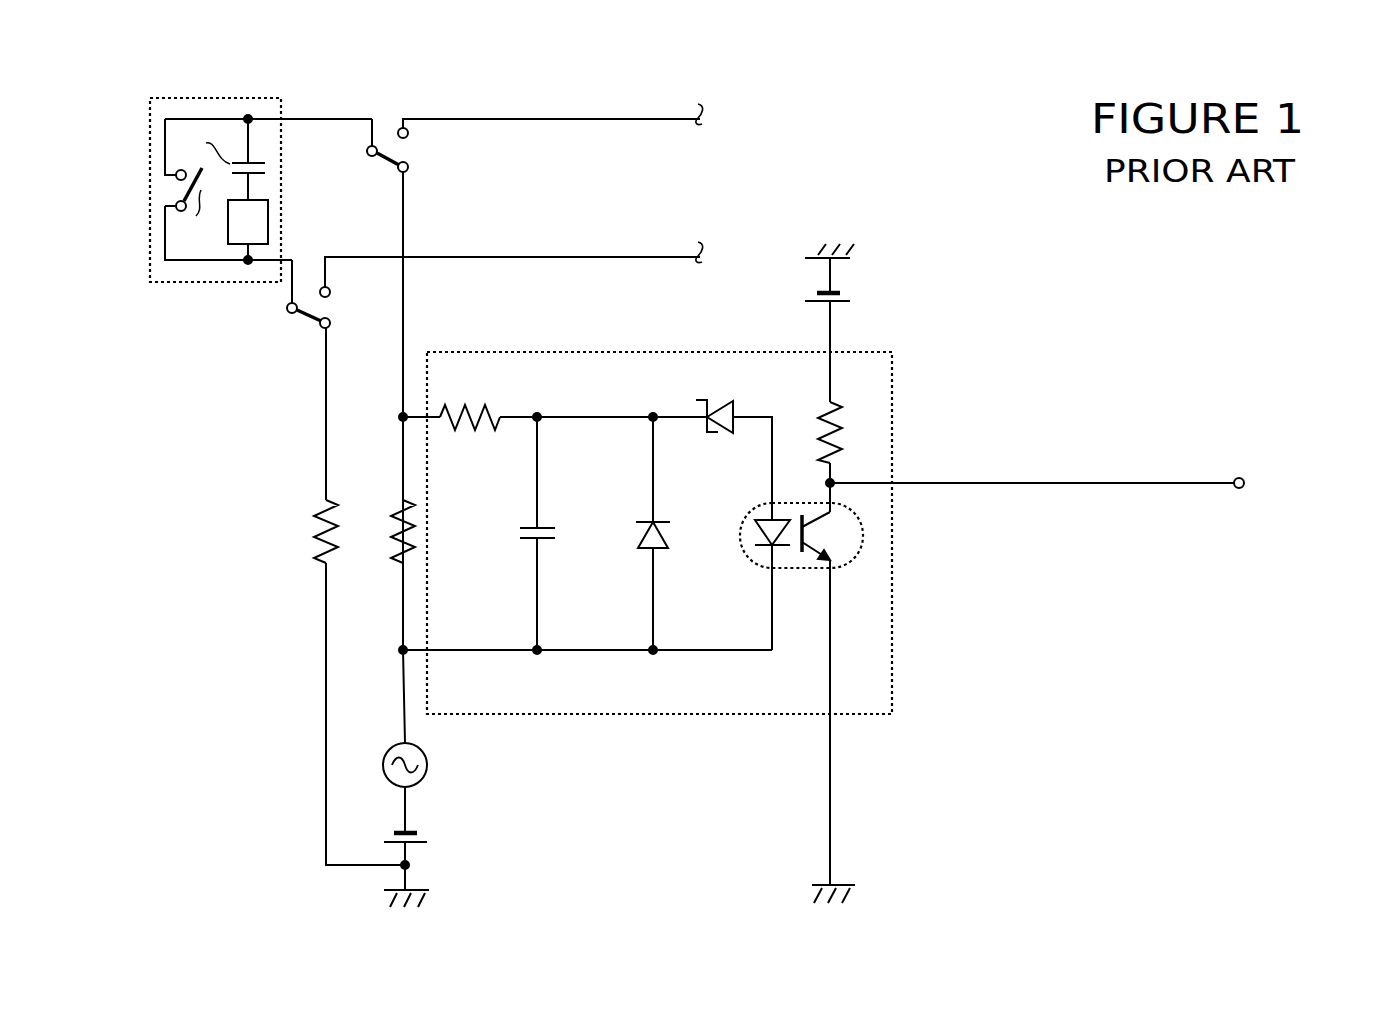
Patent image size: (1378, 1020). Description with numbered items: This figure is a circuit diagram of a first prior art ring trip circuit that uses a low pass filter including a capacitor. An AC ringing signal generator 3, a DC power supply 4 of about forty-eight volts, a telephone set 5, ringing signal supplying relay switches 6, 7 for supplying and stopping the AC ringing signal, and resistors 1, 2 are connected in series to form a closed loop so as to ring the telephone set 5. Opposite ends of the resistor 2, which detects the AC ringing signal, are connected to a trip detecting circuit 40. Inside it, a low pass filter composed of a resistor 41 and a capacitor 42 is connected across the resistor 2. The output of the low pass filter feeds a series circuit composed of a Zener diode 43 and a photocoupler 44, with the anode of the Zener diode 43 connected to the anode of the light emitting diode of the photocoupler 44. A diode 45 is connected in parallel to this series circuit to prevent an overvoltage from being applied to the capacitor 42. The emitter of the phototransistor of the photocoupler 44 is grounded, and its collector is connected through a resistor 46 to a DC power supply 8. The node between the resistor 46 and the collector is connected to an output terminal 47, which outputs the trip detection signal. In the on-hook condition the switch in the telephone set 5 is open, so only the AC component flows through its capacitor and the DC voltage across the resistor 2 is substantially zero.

The resistor 1 is at (318, 533).
The resistor 2 is at (398, 533).
The AC ringing signal generator 3 is at (400, 743).
The DC power supply 4 is at (392, 838).
The telephone set 5 is at (188, 98).
The ringing signal supplying relay switch 6 is at (328, 303).
The ringing signal supplying relay switch 7 is at (408, 152).
The DC power supply 8 is at (845, 297).
The trip detecting circuit 40 is at (475, 716).
The resistor 41 is at (475, 428).
The capacitor 42 is at (520, 532).
The Zener diode 43 is at (720, 434).
The photocoupler 44 is at (863, 522).
The diode 45 is at (660, 555).
The resistor 46 is at (842, 427).
The output terminal 47 is at (1239, 477).